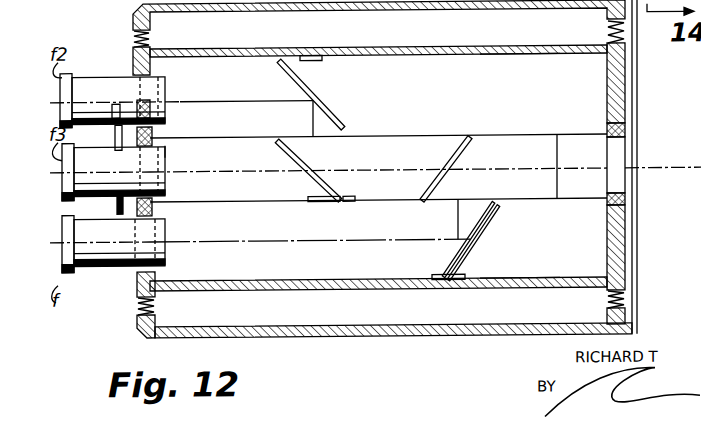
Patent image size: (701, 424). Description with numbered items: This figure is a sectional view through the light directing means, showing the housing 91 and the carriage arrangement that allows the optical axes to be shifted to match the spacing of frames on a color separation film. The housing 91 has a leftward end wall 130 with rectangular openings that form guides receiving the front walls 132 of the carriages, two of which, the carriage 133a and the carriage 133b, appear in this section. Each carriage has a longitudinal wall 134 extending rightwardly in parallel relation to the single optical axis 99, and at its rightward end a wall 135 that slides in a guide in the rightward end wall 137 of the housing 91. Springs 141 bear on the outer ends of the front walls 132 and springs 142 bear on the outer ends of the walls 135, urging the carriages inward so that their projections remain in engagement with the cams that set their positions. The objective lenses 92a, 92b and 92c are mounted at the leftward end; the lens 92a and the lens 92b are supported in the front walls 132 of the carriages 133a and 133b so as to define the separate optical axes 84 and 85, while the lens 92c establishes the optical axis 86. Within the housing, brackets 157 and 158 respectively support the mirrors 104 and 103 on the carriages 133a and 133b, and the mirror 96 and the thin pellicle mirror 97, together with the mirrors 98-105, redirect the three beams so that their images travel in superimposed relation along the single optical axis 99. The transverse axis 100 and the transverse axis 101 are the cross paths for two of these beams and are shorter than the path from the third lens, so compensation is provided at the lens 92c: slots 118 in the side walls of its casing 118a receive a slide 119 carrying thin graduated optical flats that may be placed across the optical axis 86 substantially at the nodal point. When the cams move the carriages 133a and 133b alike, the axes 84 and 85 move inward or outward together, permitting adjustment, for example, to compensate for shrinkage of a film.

The carriage end wall 135 is at (616, 82).
The rightward end wall 137 is at (628, 308).
The leftward end wall 130 is at (140, 320).
The housing 91 is at (384, 338).
The springs 141 is at (140, 36).
The springs 142 is at (608, 40).
The front wall 132 is at (155, 70).
The carriage 133b is at (410, 56).
The carriage 133a is at (334, 282).
The longitudinal wall 134 is at (507, 58).
The optical axis 85 is at (255, 101).
The transverse axis 100 is at (312, 122).
The optical axis 86 is at (262, 172).
The optical axis 84 is at (262, 243).
The transverse axis 101 is at (458, 218).
The mirrors 98-105 is at (576, 137).
The single optical axis 99 is at (700, 170).
The mirror 103 is at (333, 112).
The bracket 158 is at (306, 57).
The mirror 96 is at (330, 184).
The mirror 97 is at (468, 139).
The mirror 104 is at (470, 265).
The bracket 157 is at (432, 284).
The objective lens 92b is at (107, 77).
The objective lens 92c is at (86, 178).
The objective lens 92a is at (108, 266).
The seal block 118a is at (149, 144).
The slots 118 is at (165, 152).
The slide 119 is at (148, 104).